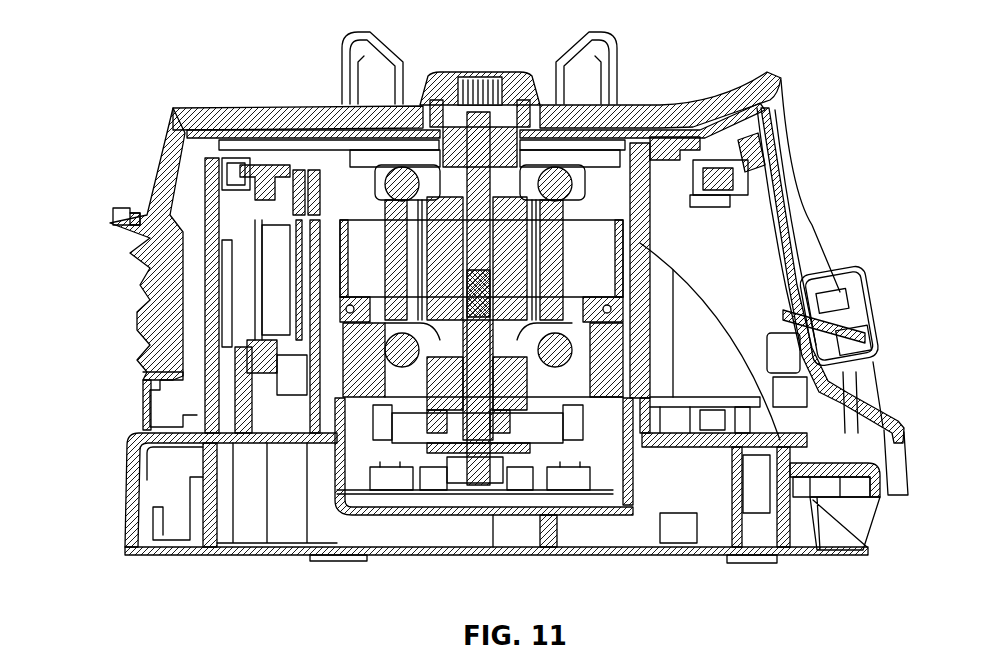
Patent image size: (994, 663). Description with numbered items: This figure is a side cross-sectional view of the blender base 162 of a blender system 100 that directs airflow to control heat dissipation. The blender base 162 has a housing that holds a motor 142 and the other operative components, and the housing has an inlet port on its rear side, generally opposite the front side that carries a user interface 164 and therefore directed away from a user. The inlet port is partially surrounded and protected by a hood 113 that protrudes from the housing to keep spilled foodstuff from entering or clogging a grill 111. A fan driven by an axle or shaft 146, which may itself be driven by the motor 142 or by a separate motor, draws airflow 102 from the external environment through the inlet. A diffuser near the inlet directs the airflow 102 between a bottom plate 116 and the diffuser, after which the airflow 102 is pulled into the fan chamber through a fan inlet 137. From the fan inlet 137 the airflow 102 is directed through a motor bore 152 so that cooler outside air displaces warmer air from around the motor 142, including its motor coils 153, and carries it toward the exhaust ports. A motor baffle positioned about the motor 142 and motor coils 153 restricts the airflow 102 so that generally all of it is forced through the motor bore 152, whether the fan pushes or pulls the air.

The blender system 100 is at (142, 49).
The airflow 102 is at (468, 511).
The grill 111 is at (157, 268).
The hood 113 is at (130, 212).
The bottom plate 116 is at (433, 571).
The fan inlet 137 is at (533, 510).
The motor 142 is at (603, 198).
The shaft 146 is at (503, 118).
The motor bore 152 is at (455, 257).
The motor coils 153 is at (400, 185).
The blender base 162 is at (848, 162).
The user interface 164 is at (865, 290).